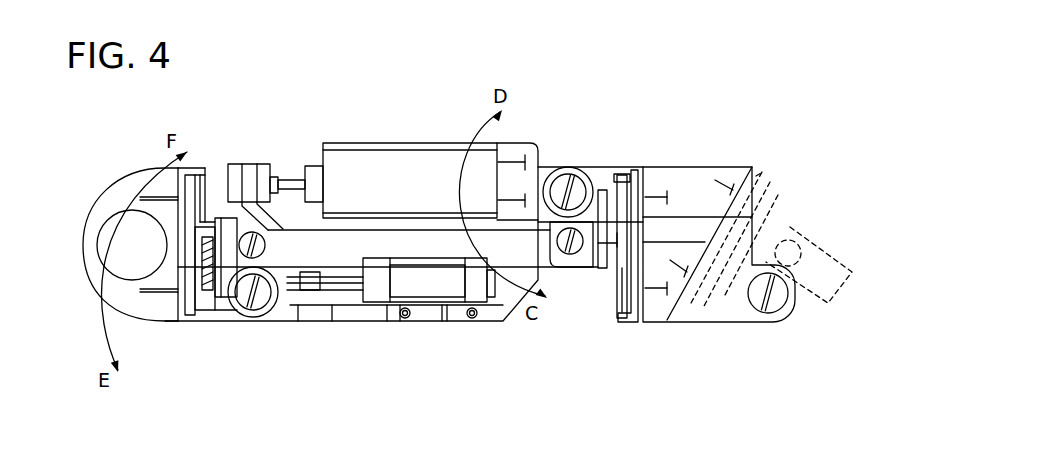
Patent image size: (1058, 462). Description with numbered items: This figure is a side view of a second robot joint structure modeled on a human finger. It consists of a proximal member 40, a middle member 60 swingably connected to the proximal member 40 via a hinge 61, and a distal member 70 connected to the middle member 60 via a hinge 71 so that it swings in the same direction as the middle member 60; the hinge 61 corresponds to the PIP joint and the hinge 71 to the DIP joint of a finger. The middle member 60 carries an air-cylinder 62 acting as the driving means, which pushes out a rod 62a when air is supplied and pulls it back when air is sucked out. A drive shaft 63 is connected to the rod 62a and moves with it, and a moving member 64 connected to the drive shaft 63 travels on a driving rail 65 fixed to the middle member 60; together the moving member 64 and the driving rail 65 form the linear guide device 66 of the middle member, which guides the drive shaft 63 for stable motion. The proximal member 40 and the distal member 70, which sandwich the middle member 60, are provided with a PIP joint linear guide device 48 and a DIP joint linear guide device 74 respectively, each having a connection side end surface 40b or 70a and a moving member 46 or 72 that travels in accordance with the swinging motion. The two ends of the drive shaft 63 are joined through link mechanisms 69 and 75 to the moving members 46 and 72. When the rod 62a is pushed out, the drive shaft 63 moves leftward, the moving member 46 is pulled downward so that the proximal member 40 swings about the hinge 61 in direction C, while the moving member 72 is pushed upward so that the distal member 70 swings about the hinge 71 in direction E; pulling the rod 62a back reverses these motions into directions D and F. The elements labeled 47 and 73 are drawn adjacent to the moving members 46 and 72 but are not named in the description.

The proximal member 40 is at (690, 167).
The connection side end surface 40b is at (619, 320).
The moving member 46 is at (605, 270).
The plate 47 is at (625, 296).
The PIP joint linear guide device 48 is at (628, 390).
The middle member 60 is at (505, 321).
The hinge 61 is at (564, 176).
The air-cylinder 62 is at (393, 163).
The rod 62a is at (280, 174).
The drive shaft 63 is at (320, 247).
The moving member 64 is at (422, 283).
The driving rail 65 is at (353, 298).
The linear guide device 66 is at (440, 390).
The link mechanism 69 is at (565, 288).
The distal member 70 is at (108, 190).
The connection side end surface 70a is at (199, 172).
The hinge 71 is at (255, 304).
The moving member 72 is at (206, 258).
The plate 73 is at (188, 224).
The DIP joint linear guide device 74 is at (195, 390).
The link mechanism 75 is at (249, 175).